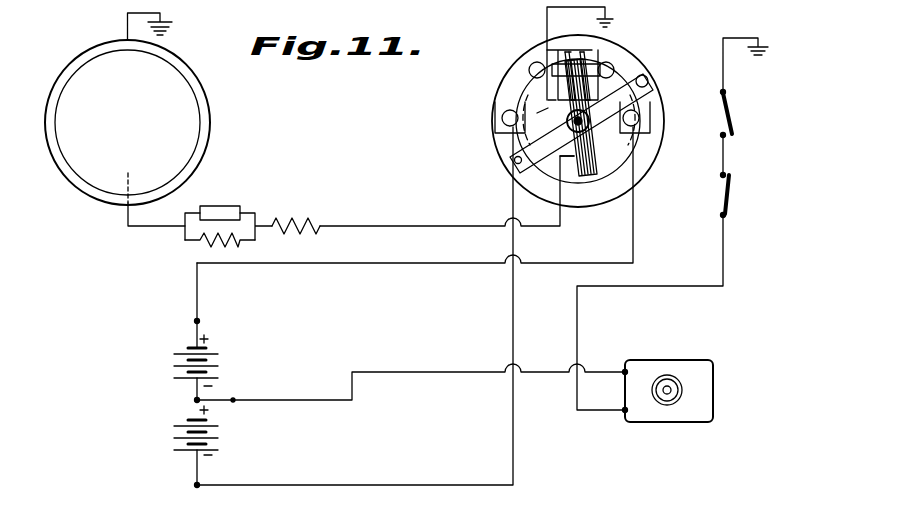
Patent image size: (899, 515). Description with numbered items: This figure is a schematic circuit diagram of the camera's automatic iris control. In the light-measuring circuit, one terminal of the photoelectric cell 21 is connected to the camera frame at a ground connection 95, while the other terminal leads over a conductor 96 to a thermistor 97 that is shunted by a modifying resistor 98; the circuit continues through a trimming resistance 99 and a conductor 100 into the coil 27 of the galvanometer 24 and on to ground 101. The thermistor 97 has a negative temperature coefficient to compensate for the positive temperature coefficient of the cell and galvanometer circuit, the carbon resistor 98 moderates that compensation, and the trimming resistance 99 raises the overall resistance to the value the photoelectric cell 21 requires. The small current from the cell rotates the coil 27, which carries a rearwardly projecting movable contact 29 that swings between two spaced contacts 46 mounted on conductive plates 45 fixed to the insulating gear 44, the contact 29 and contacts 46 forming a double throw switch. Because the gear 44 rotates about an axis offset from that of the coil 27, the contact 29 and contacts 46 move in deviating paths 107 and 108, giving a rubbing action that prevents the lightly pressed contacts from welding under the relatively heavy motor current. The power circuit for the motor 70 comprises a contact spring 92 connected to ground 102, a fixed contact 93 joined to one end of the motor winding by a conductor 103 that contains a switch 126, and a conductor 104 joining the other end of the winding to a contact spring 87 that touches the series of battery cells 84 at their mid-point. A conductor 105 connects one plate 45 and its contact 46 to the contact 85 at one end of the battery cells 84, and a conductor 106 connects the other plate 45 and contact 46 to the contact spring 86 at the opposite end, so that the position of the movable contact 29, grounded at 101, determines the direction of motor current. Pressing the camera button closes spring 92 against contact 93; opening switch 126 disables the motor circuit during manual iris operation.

The photoelectric cell 21 is at (183, 97).
The ground connection of photoelectric cell 95 is at (160, 22).
The conductor 96 is at (160, 222).
The thermistor 97 is at (222, 206).
The modifying resistor 98 is at (232, 241).
The trimming resistance 99 is at (310, 221).
The conductor 100 is at (447, 226).
The conductor 105 is at (412, 264).
The electrical contact 85 is at (197, 321).
The battery cells 84 is at (210, 372).
The contact spring 87 is at (222, 400).
The contact spring 86 is at (197, 472).
The conductor 104 is at (455, 372).
The conductor 106 is at (382, 484).
The motor 70 is at (668, 360).
The conductor 103 is at (655, 286).
The switch 126 is at (730, 200).
The fixed contact 93 is at (723, 135).
The contact spring 92 is at (733, 114).
The ground connection of contact spring 102 is at (745, 70).
The gear 44 is at (660, 144).
The galvanometer 24 is at (490, 156).
The conductive plates 45 is at (495, 108).
The contacts 46 is at (534, 62).
The coil 27 is at (590, 160).
The contact 29 is at (585, 62).
The ground 101 is at (607, 14).
The path of movable contact 107 is at (548, 100).
The path of spaced contacts 108 is at (537, 113).